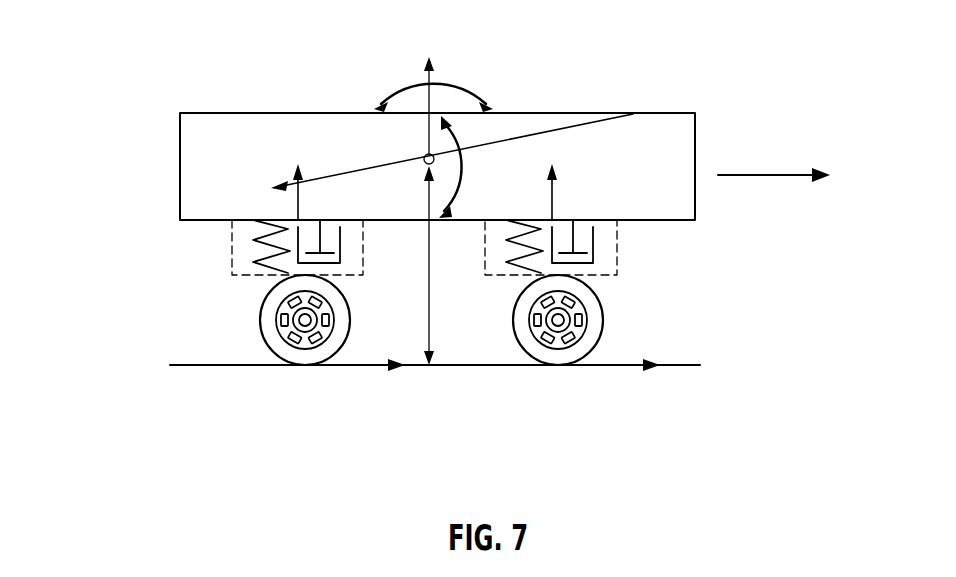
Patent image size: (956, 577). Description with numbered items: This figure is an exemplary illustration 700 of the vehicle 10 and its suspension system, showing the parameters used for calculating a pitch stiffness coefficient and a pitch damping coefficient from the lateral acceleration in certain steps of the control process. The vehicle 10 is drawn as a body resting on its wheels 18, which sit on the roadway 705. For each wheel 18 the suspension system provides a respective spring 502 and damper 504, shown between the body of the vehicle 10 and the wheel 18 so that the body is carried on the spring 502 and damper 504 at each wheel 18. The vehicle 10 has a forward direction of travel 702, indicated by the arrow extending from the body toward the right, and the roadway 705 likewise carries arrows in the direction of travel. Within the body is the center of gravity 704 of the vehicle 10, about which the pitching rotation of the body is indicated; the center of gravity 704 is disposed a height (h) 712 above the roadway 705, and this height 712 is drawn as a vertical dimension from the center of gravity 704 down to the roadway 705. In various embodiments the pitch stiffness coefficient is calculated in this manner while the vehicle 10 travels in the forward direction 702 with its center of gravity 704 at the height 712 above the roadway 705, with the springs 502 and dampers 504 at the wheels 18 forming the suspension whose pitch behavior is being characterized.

The vehicle system schematic 700 is at (132, 42).
The vehicle 10 is at (180, 135).
The center of gravity 704 is at (418, 158).
The height 712 is at (429, 272).
The damper 504 is at (340, 253).
The spring 502 is at (233, 258).
The wheel 18 is at (260, 322).
The roadway 705 is at (512, 367).
The forward direction of travel 702 is at (763, 175).